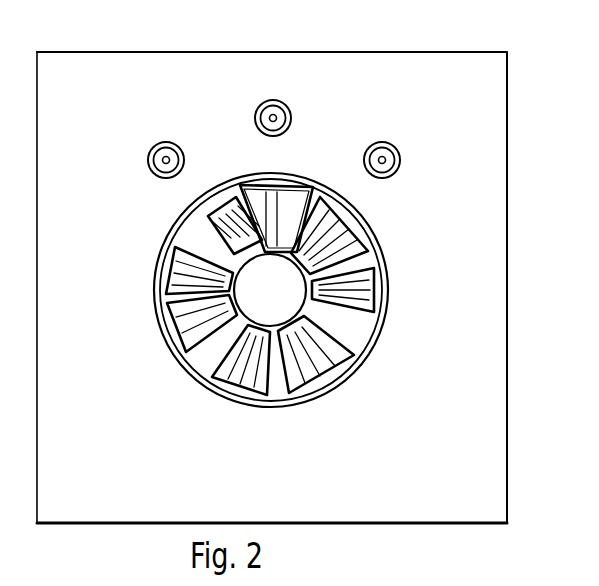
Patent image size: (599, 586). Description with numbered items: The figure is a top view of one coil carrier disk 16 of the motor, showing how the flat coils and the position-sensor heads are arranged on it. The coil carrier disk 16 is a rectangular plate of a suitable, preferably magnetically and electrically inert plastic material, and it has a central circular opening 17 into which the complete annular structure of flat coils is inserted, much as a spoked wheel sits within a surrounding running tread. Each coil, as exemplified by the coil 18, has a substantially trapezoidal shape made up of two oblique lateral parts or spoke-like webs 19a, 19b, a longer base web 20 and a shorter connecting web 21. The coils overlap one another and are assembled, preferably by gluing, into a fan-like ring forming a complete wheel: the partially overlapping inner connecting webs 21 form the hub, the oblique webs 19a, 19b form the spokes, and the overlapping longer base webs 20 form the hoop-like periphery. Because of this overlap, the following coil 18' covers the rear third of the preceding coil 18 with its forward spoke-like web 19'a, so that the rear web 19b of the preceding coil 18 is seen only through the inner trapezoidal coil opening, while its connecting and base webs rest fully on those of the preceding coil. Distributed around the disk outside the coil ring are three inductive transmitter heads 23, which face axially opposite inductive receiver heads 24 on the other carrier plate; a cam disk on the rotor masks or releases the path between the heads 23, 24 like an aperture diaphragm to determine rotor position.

The coil carrier disk 16 is at (487, 144).
The central circular opening 17 is at (265, 236).
The coil 18 is at (271, 233).
The following coil 18' is at (221, 168).
The oblique lateral part 19a is at (363, 246).
The forward spoke-like web of following coil 19'a is at (282, 168).
The oblique lateral part 19b is at (228, 180).
The base web 20 is at (361, 197).
The connecting web 21 is at (222, 281).
The inductive transmitter head 23 is at (166, 160).
The inductive receiver head 24 is at (273, 96).